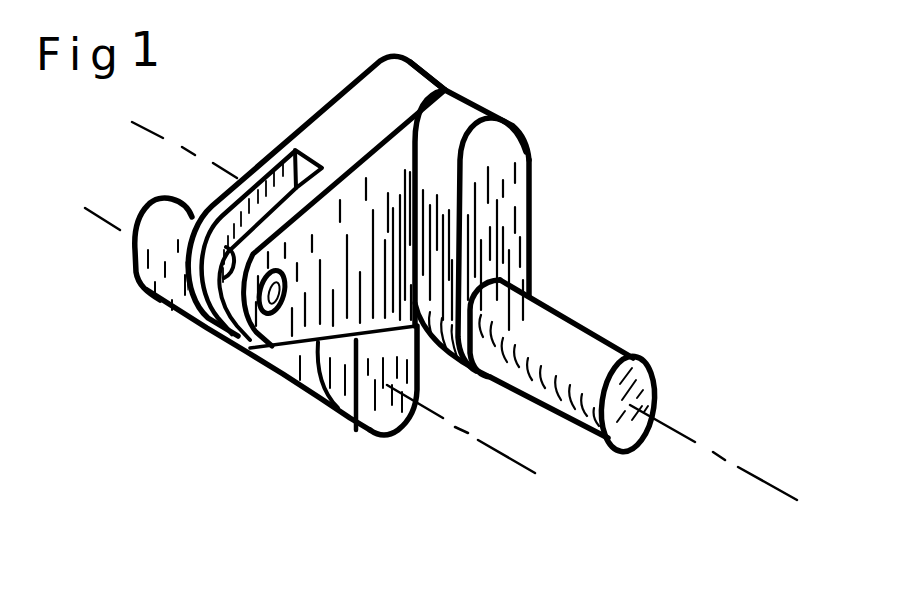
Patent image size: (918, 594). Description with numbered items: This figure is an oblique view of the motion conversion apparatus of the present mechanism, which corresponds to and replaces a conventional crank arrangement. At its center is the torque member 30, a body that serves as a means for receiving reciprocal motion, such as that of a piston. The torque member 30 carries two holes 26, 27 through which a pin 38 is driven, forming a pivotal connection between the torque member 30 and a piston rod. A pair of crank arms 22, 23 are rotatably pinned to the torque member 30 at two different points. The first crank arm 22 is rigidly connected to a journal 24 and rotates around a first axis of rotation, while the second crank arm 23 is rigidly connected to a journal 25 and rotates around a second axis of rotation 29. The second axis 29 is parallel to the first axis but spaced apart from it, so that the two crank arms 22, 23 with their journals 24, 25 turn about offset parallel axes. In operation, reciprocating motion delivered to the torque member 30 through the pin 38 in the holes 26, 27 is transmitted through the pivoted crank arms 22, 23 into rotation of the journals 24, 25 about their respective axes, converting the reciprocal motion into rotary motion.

The torque member 30 is at (392, 80).
The crank arm 22 is at (495, 213).
The journal 24 is at (560, 348).
The crank arm 23 is at (378, 430).
The journal 25 is at (163, 260).
The hole 26 is at (248, 351).
The hole 27 is at (193, 317).
The axis of rotation 29 is at (503, 455).
The pin 38 is at (758, 478).